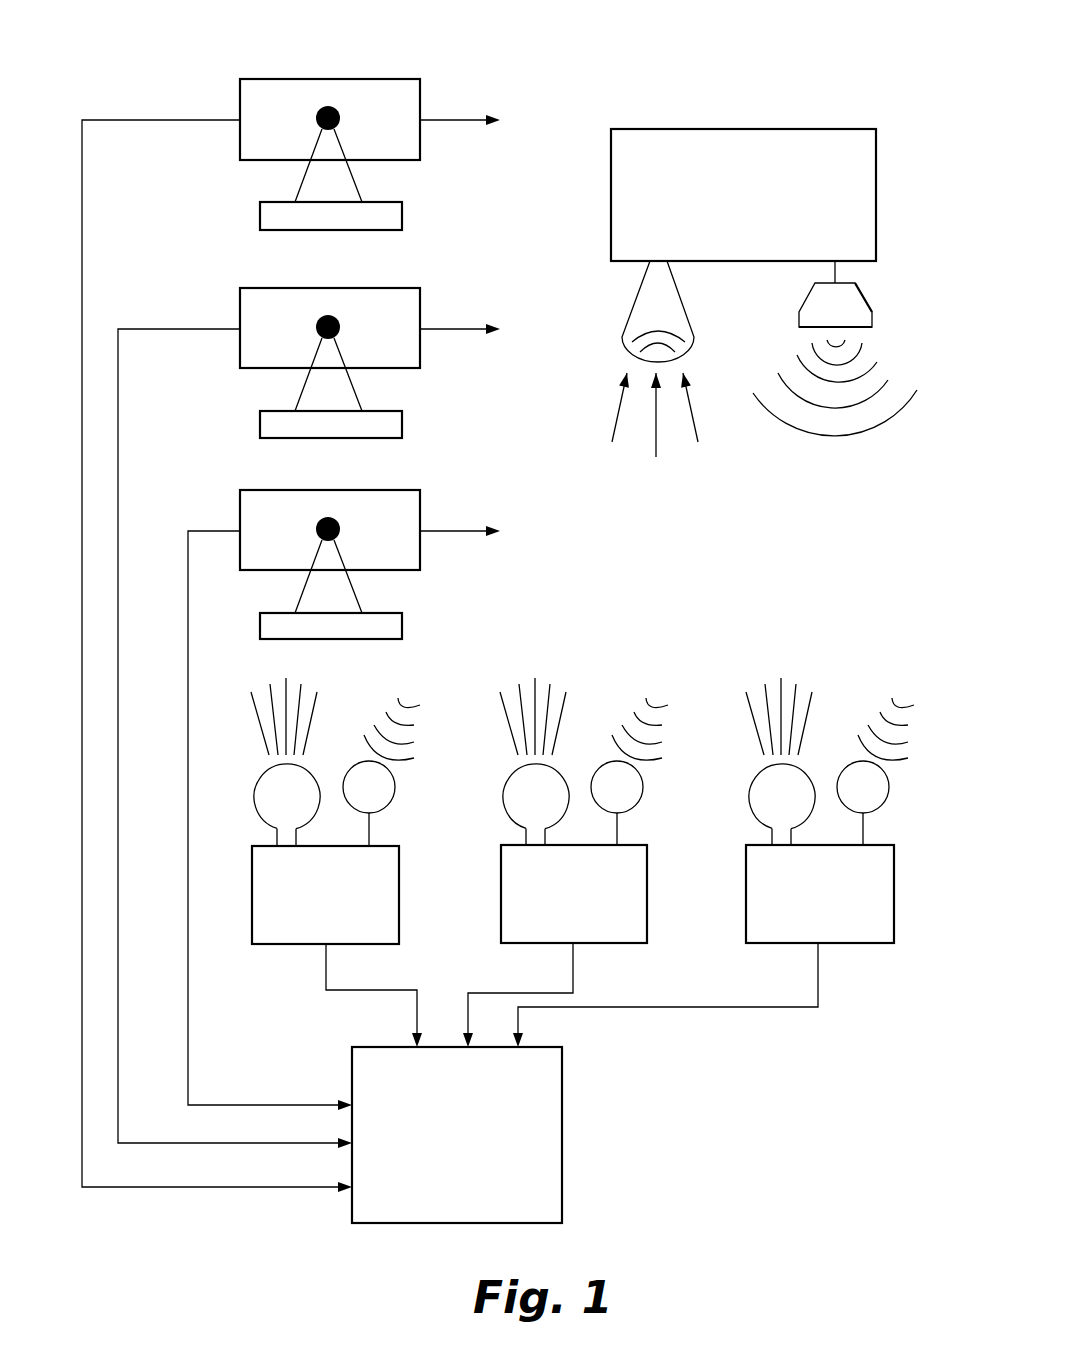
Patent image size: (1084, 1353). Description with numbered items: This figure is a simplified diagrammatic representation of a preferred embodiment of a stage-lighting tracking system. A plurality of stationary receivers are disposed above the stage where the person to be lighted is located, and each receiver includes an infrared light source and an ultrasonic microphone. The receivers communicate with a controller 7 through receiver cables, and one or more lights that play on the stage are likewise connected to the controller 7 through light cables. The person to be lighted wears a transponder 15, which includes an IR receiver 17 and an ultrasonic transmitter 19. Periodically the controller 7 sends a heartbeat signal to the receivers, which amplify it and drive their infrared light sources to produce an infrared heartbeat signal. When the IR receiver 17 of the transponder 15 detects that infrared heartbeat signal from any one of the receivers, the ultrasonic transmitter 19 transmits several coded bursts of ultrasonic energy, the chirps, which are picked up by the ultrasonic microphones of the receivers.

The controller 7 is at (562, 1143).
The transponder 15 is at (610, 218).
The IR receiver 17 is at (625, 330).
The ultrasonic transmitter 19 is at (872, 318).